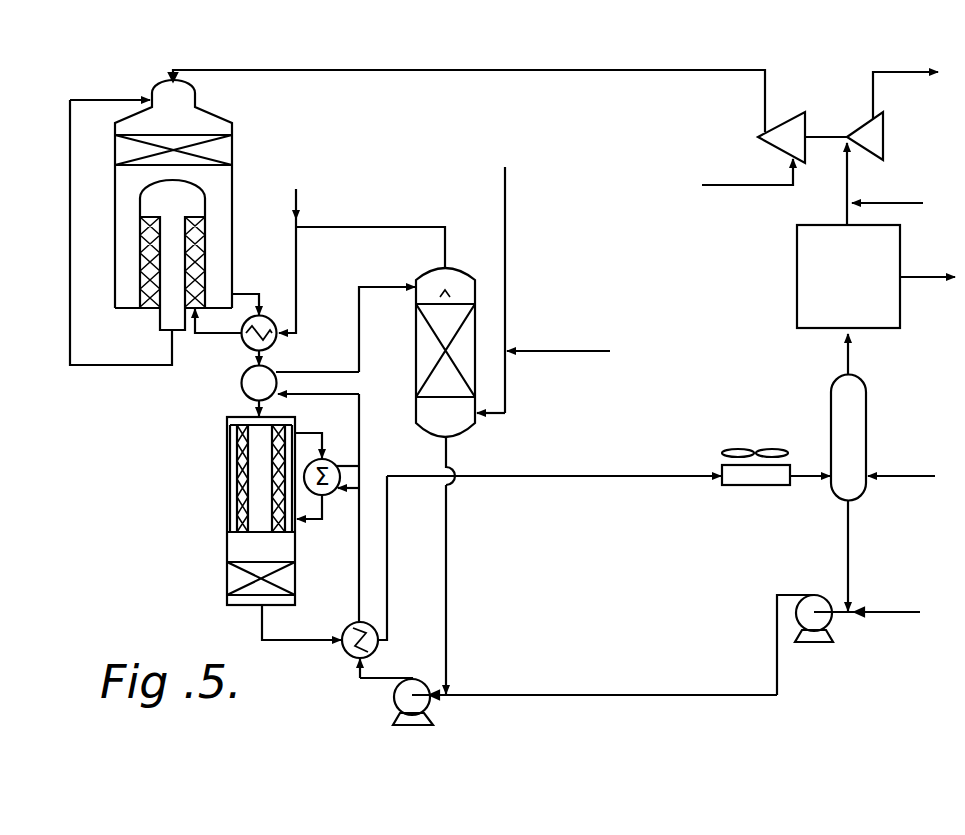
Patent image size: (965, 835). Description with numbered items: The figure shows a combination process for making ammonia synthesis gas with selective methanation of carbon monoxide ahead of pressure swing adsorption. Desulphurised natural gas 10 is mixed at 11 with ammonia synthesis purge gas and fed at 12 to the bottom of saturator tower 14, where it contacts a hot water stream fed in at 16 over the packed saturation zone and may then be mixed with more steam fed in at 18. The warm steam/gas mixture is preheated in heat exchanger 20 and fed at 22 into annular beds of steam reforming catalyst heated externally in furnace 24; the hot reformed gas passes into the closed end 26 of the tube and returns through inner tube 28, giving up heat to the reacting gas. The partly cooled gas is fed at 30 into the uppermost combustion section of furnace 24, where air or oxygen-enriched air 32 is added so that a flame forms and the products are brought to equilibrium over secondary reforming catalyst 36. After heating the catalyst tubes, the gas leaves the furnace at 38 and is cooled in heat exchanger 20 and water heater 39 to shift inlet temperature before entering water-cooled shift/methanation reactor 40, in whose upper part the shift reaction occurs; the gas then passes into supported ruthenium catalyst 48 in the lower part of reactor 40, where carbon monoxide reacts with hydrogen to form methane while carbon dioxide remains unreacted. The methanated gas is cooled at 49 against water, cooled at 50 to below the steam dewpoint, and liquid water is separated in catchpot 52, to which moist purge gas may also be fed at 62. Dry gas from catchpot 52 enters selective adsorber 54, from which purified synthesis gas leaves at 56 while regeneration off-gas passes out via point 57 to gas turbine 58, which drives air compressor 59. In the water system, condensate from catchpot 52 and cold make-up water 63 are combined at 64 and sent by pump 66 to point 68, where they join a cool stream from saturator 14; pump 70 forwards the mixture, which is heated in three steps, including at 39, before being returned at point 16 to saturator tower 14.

The desulphurised natural gas 10 is at (507, 178).
The mixing point 11 is at (536, 356).
The feed point 12 is at (492, 420).
The saturator tower 14 is at (416, 397).
The hot water feed point 16 is at (540, 376).
The steam feed point 18 is at (300, 207).
The preheater / heat exchanger 20 is at (274, 343).
The reformer tube 22 is at (218, 322).
The furnace 24 is at (232, 165).
The closed end of tube 26 is at (161, 206).
The inner tube 28 is at (170, 338).
The feed point to combustion section 30 is at (102, 100).
The air feed 32 is at (203, 70).
The secondary reforming catalyst 36 is at (173, 150).
The furnace gas outlet 38 is at (258, 294).
The water heater 39 is at (246, 392).
The water-cooled shift/methanation reactor 40 is at (227, 522).
The supported ruthenium catalyst 48 is at (258, 574).
The cooler / heat exchanger 49 is at (374, 652).
The cooler 50 is at (757, 486).
The catchpot 52 is at (866, 494).
The selective adsorber 54 is at (837, 294).
The purified synthesis gas outlet 56 is at (935, 280).
The regeneration off-gas outlet 57 is at (845, 204).
The gas turbine 58 is at (883, 130).
The air compressor 59 is at (762, 142).
The purge gas feed point 62 is at (915, 472).
The cold make-up water 63 is at (903, 610).
The make-up water addition point 64 is at (853, 617).
The pump 66 is at (817, 647).
The junction point 68 is at (594, 605).
The pump 70 is at (395, 709).